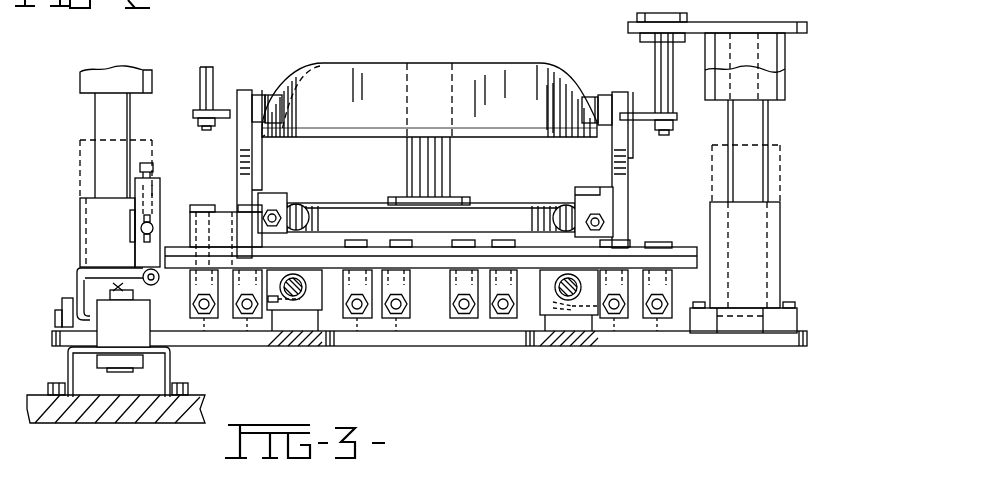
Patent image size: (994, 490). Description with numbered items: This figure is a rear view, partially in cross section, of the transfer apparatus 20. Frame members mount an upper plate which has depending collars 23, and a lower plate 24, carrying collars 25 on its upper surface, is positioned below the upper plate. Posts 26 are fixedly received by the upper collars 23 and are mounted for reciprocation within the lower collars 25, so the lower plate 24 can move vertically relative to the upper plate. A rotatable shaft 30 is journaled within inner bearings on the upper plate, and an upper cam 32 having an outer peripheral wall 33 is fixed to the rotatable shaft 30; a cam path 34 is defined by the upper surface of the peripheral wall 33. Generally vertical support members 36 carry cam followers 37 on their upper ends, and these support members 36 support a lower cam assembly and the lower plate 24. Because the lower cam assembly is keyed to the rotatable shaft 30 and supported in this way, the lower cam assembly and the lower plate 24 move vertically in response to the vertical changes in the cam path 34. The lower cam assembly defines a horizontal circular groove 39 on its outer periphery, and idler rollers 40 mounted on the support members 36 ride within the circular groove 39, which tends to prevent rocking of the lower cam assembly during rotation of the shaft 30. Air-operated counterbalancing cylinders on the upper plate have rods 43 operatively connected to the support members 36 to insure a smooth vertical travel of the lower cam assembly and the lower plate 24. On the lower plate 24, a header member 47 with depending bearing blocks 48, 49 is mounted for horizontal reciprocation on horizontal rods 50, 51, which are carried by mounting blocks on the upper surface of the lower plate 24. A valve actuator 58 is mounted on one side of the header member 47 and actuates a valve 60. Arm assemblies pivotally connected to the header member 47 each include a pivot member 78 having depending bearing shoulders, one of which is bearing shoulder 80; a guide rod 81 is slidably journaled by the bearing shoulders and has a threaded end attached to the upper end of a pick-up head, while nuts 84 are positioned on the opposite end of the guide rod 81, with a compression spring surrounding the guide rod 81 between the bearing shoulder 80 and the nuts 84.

The transfer apparatus 20 is at (797, 19).
The depending collars 23 is at (80, 85).
The lower plate 24 is at (518, 347).
The collars 25 is at (80, 212).
The posts 26 is at (95, 118).
The rotatable shaft 30 is at (460, 63).
The upper cam 32 is at (392, 124).
The outer peripheral wall 33 is at (263, 138).
The cam path 34 is at (300, 74).
The vertical support members 36 is at (237, 168).
The cam followers 37 is at (270, 95).
The horizontal circular groove 39 is at (500, 217).
The idler rollers 40 is at (298, 212).
The rods 43 is at (200, 90).
The header member 47 is at (420, 258).
The bearing block 48 is at (588, 318).
The bearing block 49 is at (313, 318).
The horizontal rod 50 is at (563, 312).
The horizontal rod 51 is at (290, 300).
The valve actuator 58 is at (135, 258).
The valve 60 is at (100, 278).
The pivot member 78 is at (196, 268).
The bearing shoulder 80 is at (195, 297).
The guide rod 81 is at (249, 318).
The nuts 84 is at (203, 318).